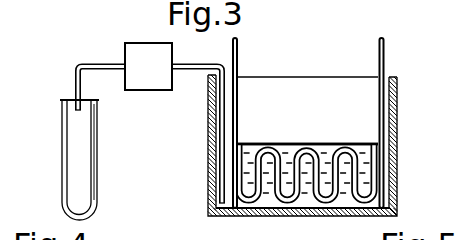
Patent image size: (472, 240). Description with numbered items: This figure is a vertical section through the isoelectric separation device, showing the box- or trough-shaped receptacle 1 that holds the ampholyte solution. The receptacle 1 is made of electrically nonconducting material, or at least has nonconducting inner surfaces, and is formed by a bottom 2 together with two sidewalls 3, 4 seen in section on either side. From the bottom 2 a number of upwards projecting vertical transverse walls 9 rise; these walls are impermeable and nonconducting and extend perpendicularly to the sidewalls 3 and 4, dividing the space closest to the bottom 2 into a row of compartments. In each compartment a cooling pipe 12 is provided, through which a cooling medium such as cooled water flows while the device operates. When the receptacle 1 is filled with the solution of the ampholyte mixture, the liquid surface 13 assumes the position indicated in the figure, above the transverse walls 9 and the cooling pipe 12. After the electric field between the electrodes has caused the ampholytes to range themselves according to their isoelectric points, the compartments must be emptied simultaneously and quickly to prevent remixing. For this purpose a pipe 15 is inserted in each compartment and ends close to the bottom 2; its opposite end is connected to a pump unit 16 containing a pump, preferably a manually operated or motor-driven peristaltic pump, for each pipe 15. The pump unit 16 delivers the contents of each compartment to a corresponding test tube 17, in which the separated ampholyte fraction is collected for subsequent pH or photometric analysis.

The receptacle 1 is at (286, 88).
The bottom 2 is at (312, 216).
The sidewall 3 is at (208, 136).
The sidewall 4 is at (393, 164).
The transverse wall 9 is at (237, 203).
The cooling pipe 12 is at (309, 145).
The liquid surface 13 is at (248, 142).
The pipe 15 is at (213, 107).
The pump unit 16 is at (148, 83).
The test tube 17 is at (71, 192).